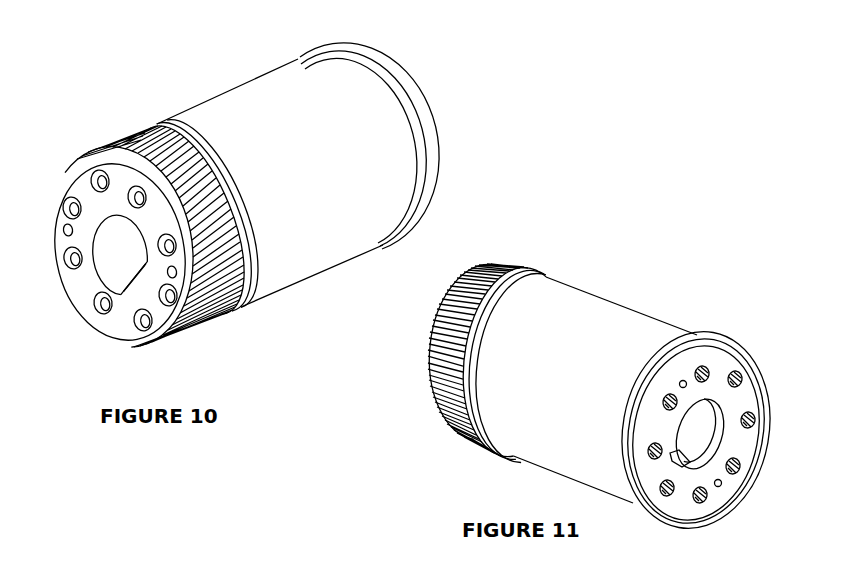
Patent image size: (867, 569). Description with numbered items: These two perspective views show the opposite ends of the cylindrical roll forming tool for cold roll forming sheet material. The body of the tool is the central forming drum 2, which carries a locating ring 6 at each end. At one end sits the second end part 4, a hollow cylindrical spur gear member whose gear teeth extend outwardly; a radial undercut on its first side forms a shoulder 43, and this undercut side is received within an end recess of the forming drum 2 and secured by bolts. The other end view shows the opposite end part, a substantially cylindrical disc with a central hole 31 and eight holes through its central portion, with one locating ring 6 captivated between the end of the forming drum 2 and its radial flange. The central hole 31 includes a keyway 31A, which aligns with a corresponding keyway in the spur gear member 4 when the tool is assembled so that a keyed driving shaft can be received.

In FIG. 10, the forming drum 2 is at (270, 183).
In FIG. 11, the forming drum 2 is at (605, 390).
In FIG. 10, the second end part 4 is at (65, 271).
In FIG. 10, the locating ring 6 is at (158, 124).
In FIG. 11, the locating ring 6 is at (553, 271).
In FIG. 10, the shoulder 43 is at (212, 329).
In FIG. 11, the shoulder 43 is at (428, 381).
In FIG. 11, the central hole 31 is at (716, 437).
In FIG. 11, the keyway 31A is at (686, 468).